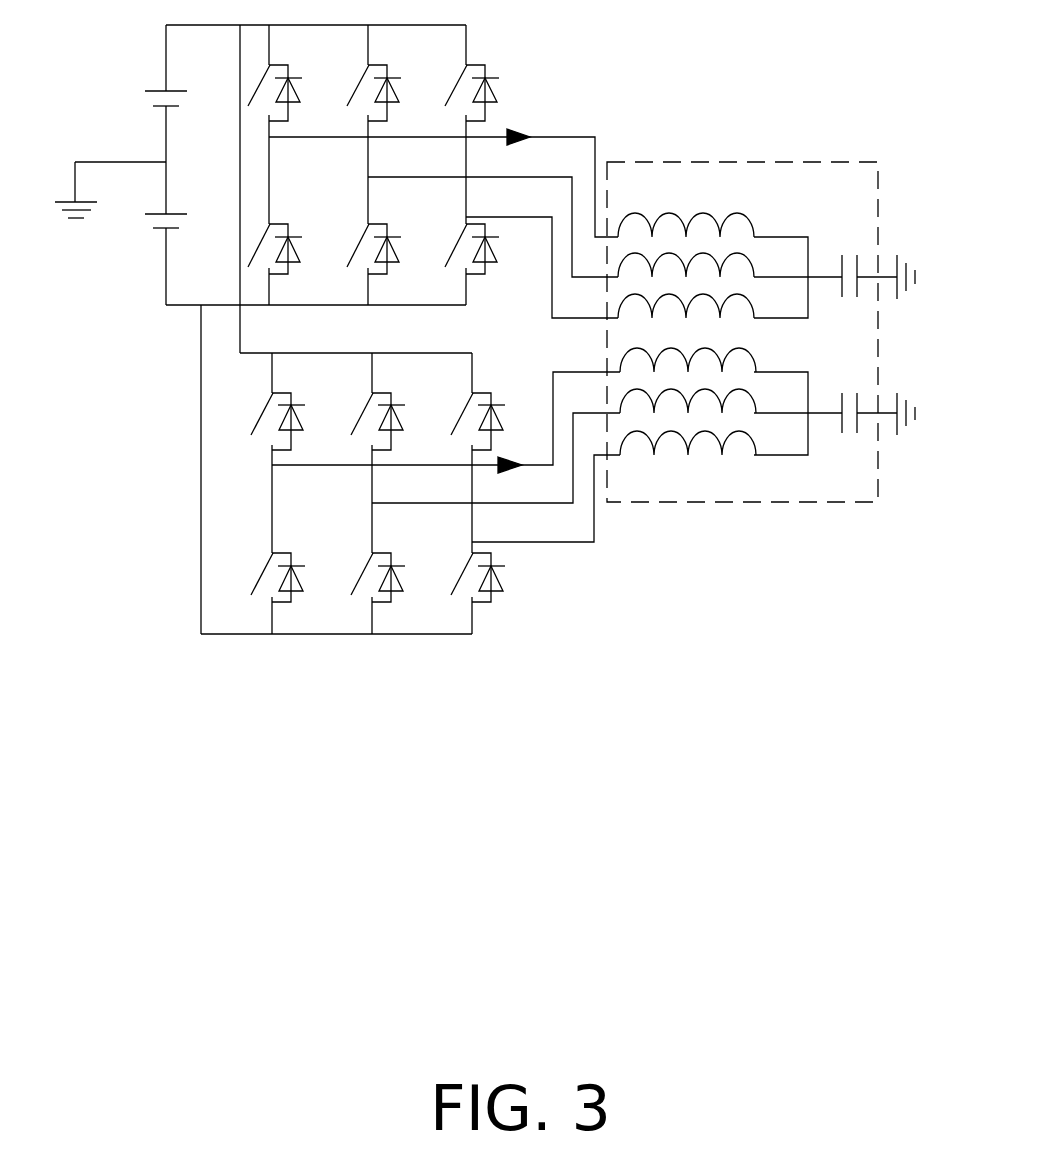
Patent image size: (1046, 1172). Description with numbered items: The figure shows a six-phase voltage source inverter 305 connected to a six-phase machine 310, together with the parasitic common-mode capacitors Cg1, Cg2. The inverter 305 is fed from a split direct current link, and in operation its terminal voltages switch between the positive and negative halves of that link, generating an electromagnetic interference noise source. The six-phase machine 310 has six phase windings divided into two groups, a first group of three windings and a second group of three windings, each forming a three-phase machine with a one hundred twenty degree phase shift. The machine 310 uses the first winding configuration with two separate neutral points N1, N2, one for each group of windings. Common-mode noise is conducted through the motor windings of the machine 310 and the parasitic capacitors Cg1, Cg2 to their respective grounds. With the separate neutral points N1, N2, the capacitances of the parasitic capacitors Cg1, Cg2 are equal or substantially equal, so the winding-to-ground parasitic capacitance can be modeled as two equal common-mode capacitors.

The six-phase voltage source inverter 305 is at (427, 703).
The six-phase machine 310 is at (743, 502).
The first neutral point N1 is at (812, 280).
The second neutral point N2 is at (812, 418).
The parasitic common-mode capacitor Cg1 is at (865, 256).
The parasitic common-mode capacitor Cg2 is at (865, 392).